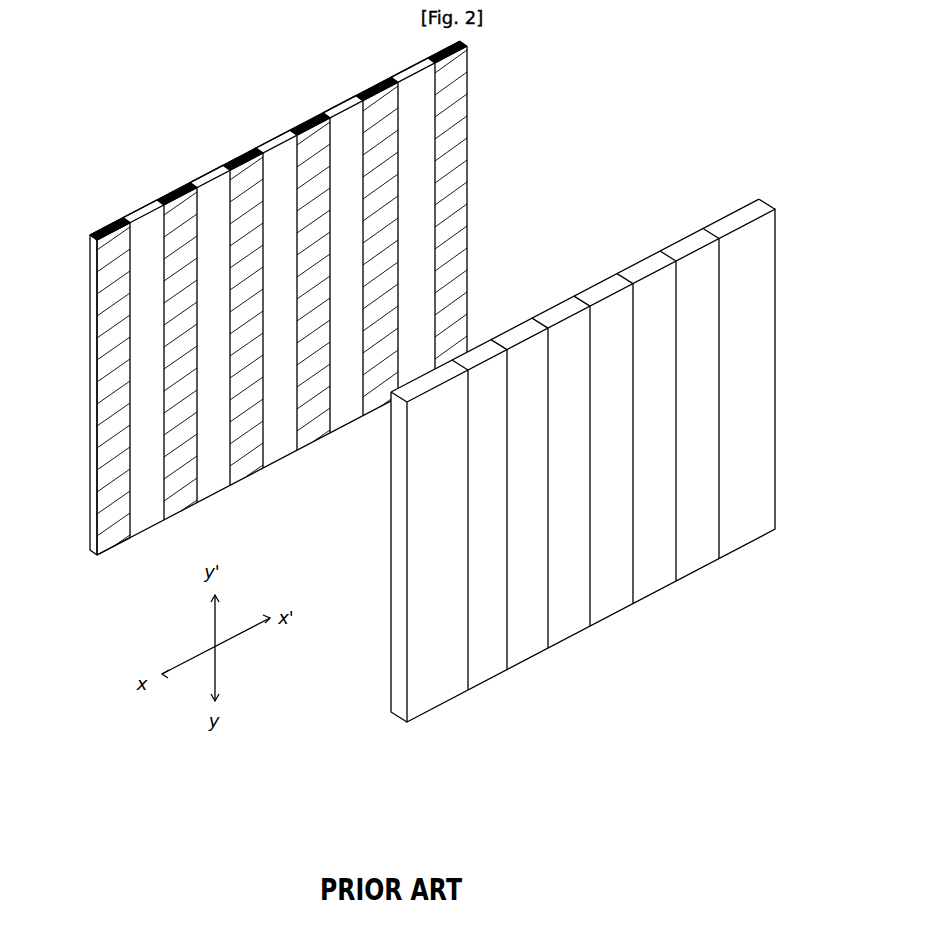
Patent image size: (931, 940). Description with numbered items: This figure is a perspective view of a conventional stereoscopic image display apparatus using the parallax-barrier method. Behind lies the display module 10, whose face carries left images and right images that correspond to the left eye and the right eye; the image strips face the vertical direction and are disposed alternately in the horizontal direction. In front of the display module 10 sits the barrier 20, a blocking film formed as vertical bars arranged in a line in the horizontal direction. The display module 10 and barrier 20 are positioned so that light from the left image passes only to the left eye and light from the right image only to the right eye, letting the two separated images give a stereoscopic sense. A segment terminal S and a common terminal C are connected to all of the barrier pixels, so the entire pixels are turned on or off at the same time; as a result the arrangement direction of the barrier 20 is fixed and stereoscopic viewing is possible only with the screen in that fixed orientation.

The display module 10 is at (765, 410).
The barrier 20 is at (462, 132).
The segment terminal S is at (90, 238).
The common terminal C is at (97, 556).